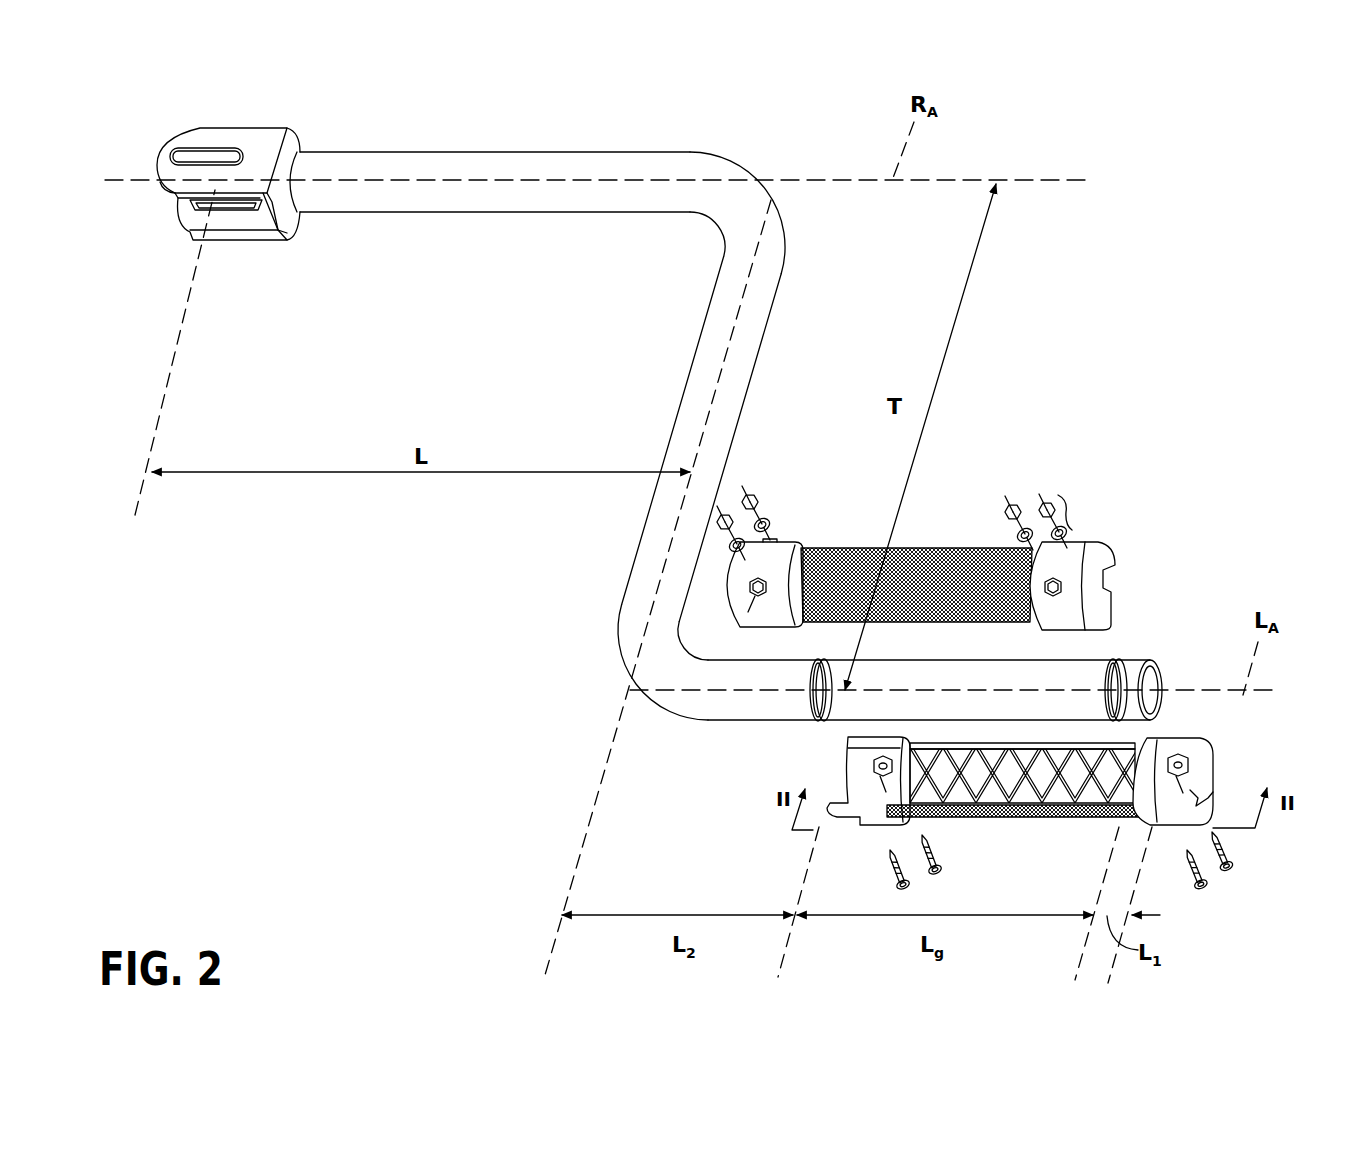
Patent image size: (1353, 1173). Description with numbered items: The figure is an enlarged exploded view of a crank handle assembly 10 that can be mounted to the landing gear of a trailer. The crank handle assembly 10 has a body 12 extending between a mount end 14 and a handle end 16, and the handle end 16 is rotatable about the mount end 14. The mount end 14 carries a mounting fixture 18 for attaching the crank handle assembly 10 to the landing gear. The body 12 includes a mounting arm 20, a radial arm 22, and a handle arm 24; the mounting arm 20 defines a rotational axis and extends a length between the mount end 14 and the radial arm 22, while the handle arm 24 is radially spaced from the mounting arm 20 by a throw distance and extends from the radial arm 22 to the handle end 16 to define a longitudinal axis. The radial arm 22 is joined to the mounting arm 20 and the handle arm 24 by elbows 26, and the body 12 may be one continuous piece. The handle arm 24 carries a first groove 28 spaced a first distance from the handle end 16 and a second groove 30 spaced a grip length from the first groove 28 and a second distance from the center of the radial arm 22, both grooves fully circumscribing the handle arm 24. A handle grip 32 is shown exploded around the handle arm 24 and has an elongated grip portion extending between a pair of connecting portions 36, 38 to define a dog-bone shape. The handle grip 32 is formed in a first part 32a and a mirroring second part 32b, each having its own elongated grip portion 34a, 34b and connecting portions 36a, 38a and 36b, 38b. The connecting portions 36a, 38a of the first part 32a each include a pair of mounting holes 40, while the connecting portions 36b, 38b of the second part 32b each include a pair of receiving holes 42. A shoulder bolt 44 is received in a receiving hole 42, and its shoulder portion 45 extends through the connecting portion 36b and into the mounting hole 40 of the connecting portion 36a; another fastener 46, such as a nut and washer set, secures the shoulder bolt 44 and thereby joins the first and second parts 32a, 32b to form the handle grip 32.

The crank handle assembly 10 is at (488, 128).
The body 12 is at (736, 164).
The mount end 14 is at (252, 172).
The handle end 16 is at (1150, 662).
The mounting fixture 18 is at (208, 140).
The mounting arm 20 is at (560, 152).
The radial arm 22 is at (684, 392).
The handle arm 24 is at (866, 702).
The elbows 26 is at (655, 658).
The first groove 28 is at (1124, 702).
The second groove 30 is at (816, 702).
The handle grip 32 is at (995, 659).
The first part 32a is at (947, 553).
The second part 32b is at (1004, 811).
The elongated grip portion 34a is at (940, 546).
The elongated grip portion 34b is at (1045, 820).
The connecting portion 36 is at (1105, 562).
The connecting portion 36a is at (1065, 606).
The connecting portion 36b is at (1218, 779).
The connecting portion 38 is at (779, 573).
The connecting portion 38a is at (793, 573).
The connecting portion 38b is at (875, 826).
The mounting hole 40 is at (770, 600).
The receiving hole 42 is at (1186, 764).
The shoulder bolt 44 is at (1233, 880).
The shoulder portion 45 is at (946, 858).
The fastener 46 is at (1080, 512).